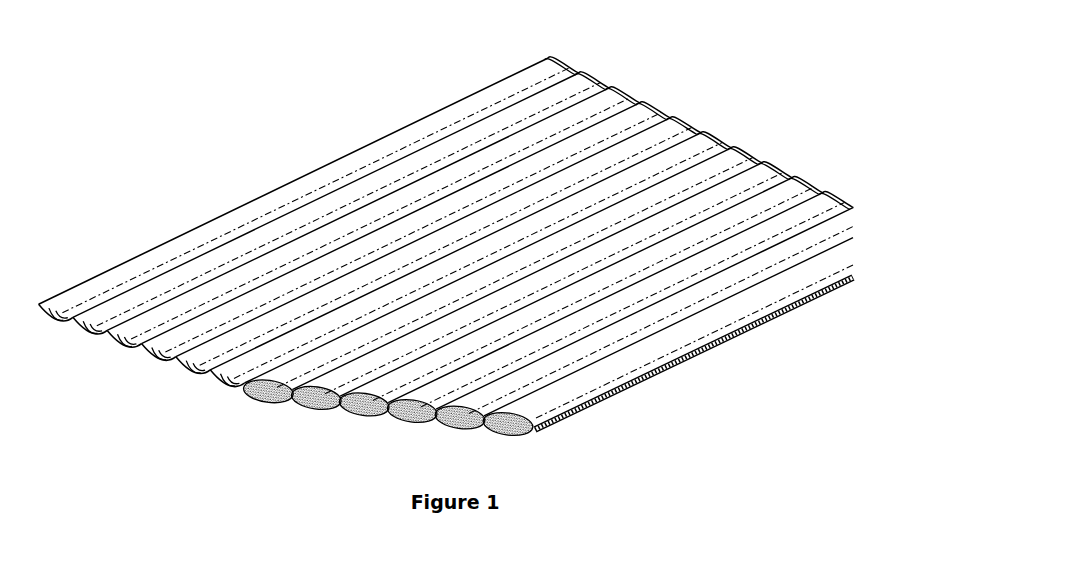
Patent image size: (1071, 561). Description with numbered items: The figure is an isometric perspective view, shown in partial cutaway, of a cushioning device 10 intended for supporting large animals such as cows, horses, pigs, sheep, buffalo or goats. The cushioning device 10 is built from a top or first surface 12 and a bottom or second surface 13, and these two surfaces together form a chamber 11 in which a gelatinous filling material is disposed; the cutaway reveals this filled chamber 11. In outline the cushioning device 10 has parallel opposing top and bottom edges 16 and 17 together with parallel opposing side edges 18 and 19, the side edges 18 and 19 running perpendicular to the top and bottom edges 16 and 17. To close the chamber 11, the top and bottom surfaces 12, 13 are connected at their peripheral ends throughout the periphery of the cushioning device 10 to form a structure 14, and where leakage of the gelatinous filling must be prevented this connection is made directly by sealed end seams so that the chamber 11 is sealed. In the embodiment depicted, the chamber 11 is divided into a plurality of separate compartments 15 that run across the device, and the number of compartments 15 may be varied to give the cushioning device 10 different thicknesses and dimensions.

The cushioning device 10 is at (281, 152).
The chamber 11 is at (417, 421).
The top or first surface 12 is at (428, 167).
The bottom or second surface 13 is at (683, 367).
The structure 14 is at (60, 320).
The compartments 15 is at (363, 410).
The top edge 16 is at (160, 367).
The bottom edge 17 is at (618, 82).
The side edge 18 is at (612, 395).
The side edge 19 is at (168, 241).